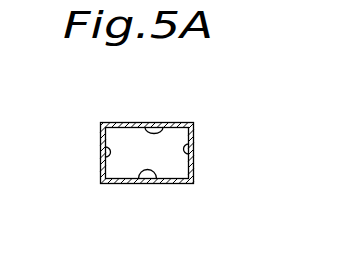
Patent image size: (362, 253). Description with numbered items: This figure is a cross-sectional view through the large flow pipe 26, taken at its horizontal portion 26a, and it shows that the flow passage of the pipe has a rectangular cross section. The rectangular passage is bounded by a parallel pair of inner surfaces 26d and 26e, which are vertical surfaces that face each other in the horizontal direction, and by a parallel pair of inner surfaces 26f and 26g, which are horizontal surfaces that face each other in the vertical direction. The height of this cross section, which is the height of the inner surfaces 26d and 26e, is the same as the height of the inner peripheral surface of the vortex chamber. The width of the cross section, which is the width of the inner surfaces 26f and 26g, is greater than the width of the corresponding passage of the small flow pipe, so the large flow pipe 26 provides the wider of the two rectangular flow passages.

The large flow pipe 26 is at (229, 153).
The horizontal portion 26a is at (193, 170).
The inner surface (vertical surface) 26d is at (193, 145).
The inner surface (vertical surface) 26e is at (100, 147).
The inner surface (horizontal surface) 26f is at (168, 123).
The inner surface (horizontal surface) 26g is at (157, 183).